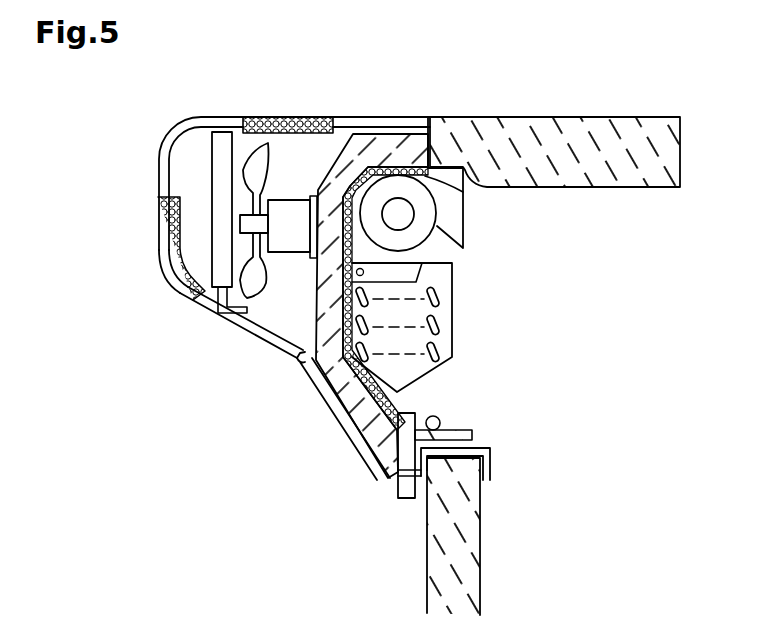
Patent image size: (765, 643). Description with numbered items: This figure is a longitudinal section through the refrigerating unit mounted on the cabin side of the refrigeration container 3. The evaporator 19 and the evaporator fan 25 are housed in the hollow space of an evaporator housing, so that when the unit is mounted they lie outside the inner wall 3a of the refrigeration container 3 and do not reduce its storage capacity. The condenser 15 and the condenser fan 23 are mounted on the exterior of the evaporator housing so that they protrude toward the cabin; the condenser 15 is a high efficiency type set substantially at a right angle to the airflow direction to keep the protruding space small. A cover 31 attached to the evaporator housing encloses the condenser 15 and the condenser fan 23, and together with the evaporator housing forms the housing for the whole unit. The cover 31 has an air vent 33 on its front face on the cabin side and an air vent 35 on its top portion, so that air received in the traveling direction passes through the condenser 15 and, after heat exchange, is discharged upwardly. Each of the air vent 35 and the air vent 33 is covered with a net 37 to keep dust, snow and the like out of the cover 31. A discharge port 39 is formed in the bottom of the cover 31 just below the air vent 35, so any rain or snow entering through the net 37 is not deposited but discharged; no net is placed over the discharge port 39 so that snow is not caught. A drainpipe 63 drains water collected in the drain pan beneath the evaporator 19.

The refrigeration container 3 is at (590, 147).
The inner wall 3a is at (480, 533).
The condenser 15 is at (220, 178).
The evaporator 19 is at (443, 298).
The condenser fan 23 is at (287, 212).
The evaporator fan 25 is at (427, 202).
The cover 31 is at (167, 142).
The air vent 33 is at (160, 262).
The air vent 35 is at (323, 117).
The net 37 is at (250, 117).
The discharge port 39 is at (277, 347).
The drainpipe 63 is at (383, 472).